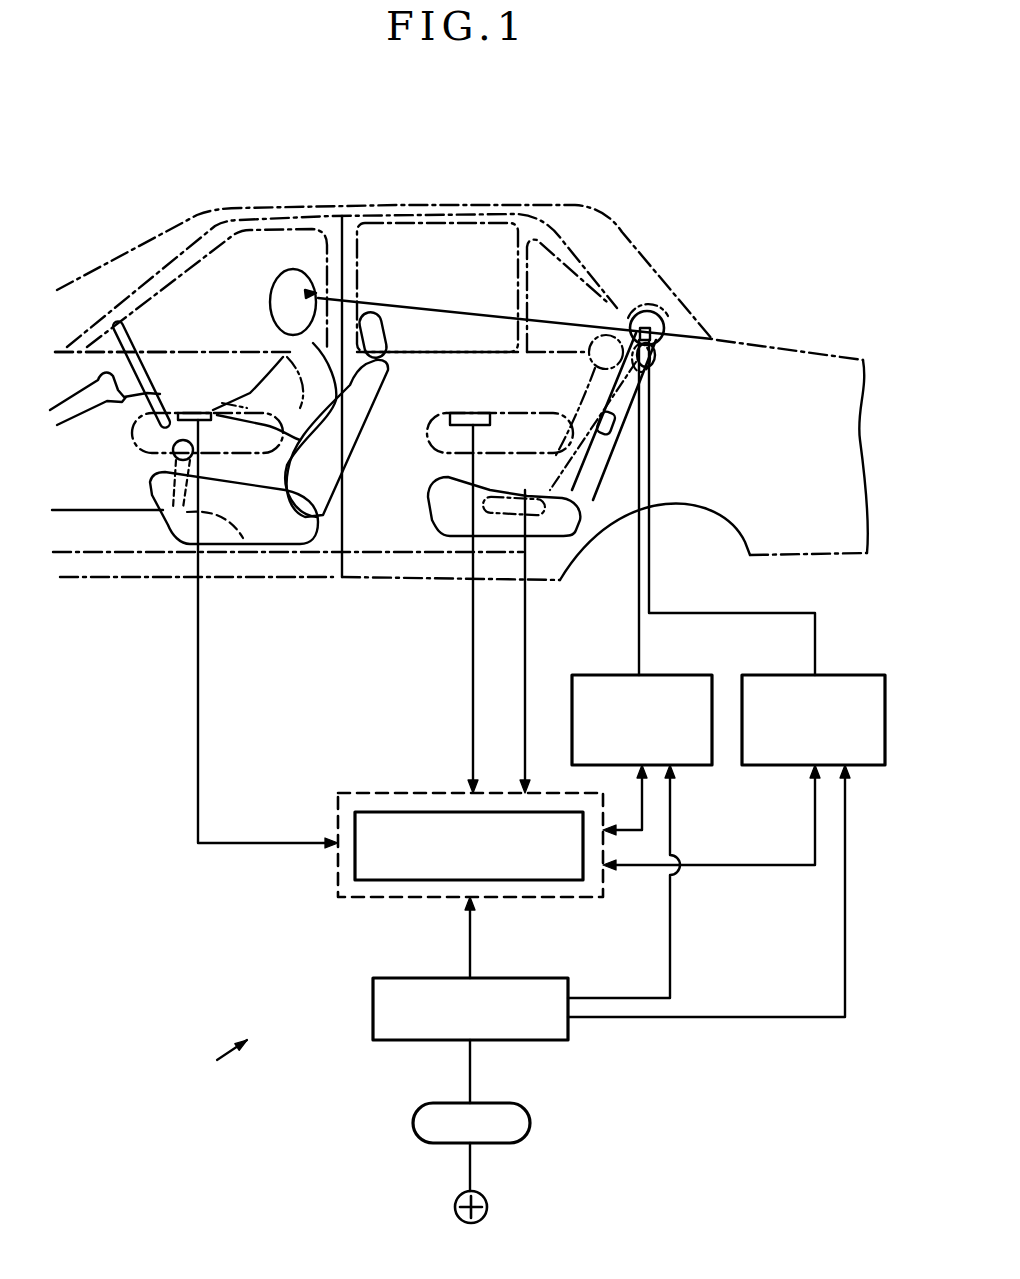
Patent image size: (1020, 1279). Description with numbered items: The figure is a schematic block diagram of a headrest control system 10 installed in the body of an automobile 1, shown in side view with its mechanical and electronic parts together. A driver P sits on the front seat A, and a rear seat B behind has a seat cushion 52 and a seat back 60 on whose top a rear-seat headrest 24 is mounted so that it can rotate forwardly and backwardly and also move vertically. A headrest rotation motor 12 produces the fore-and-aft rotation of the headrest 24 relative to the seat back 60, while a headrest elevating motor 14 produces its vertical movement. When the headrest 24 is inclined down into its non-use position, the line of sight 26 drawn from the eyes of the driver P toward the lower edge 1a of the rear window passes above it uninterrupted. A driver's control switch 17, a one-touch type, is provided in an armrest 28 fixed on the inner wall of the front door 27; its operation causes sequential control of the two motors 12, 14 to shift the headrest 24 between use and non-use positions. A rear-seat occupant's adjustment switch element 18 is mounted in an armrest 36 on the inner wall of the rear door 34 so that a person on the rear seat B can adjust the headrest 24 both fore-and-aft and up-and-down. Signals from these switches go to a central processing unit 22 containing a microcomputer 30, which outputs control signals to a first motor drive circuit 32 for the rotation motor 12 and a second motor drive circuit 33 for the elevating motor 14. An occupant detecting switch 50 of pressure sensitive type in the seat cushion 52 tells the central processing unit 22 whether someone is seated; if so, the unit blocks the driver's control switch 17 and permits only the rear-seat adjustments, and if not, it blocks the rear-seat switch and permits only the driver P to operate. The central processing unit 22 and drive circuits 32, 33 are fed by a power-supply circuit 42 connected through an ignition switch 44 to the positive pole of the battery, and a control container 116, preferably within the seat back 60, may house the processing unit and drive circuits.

The body of automobile 1 is at (495, 205).
The lower edge of rear window 1a is at (721, 340).
The headrest control system 10 is at (215, 1075).
The headrest rotation motor 12 is at (654, 373).
The headrest elevating motor 14 is at (659, 324).
The driver's control switch 17 is at (191, 412).
The rear-seat occupant's adjustment switch element 18 is at (458, 411).
The central processing unit 22 is at (581, 898).
The rear-seat headrest 24 is at (633, 297).
The line of sight 26 is at (479, 316).
The front door 27 is at (176, 352).
The armrest 28 is at (133, 436).
The microcomputer 30 is at (553, 820).
The first motor drive circuit 32 is at (692, 678).
The second motor drive circuit 33 is at (867, 678).
The rear door 34 is at (418, 357).
The armrest 36 is at (519, 420).
The power-supply circuit 42 is at (373, 990).
The ignition switch 44 is at (522, 1113).
The occupant detecting switch 50 is at (530, 500).
The seat cushion 52 is at (447, 535).
The seat back 60 is at (593, 483).
The control container 116 is at (605, 414).
The driver P is at (293, 268).
The front seat A is at (365, 442).
The rear seat B is at (620, 443).